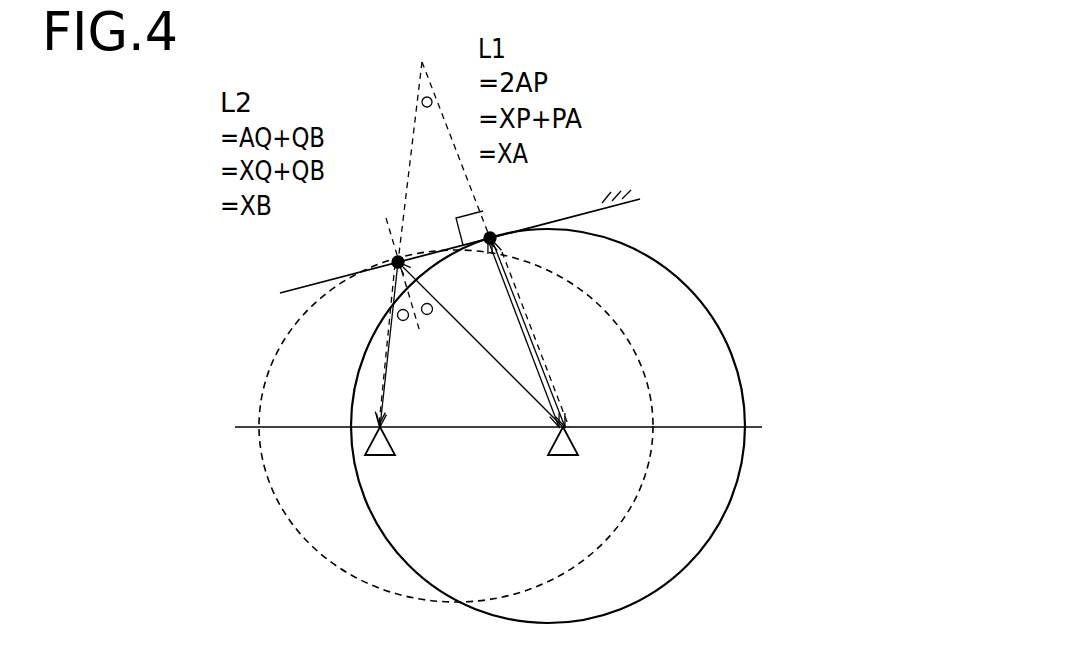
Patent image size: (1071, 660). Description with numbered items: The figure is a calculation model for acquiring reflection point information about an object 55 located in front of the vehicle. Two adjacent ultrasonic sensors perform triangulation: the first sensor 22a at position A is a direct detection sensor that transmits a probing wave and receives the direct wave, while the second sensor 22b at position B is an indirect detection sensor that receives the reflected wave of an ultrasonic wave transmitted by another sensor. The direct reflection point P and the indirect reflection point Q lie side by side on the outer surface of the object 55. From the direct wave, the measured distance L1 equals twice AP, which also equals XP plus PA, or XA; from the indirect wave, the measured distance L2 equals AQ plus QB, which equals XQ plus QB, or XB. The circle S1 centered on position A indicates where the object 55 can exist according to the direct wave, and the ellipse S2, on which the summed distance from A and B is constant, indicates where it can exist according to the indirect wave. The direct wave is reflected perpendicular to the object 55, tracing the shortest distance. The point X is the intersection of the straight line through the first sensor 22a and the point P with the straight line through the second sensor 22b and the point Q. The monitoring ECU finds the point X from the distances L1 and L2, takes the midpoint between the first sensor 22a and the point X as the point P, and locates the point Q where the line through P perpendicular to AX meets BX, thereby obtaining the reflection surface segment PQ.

The first sensor 22a is at (540, 468).
The second sensor 22b is at (403, 468).
The object 55 is at (587, 213).
The circle S1 is at (698, 555).
The ellipse S2 is at (307, 540).
The measured distance from the direct wave L1 is at (540, 370).
The measured distance from the indirect wave L2 is at (509, 373).
The position of the first sensor A is at (553, 428).
The position of the second sensor B is at (385, 430).
The direct reflection point P is at (482, 222).
The indirect reflection point Q is at (392, 275).
The intersection point X is at (444, 142).